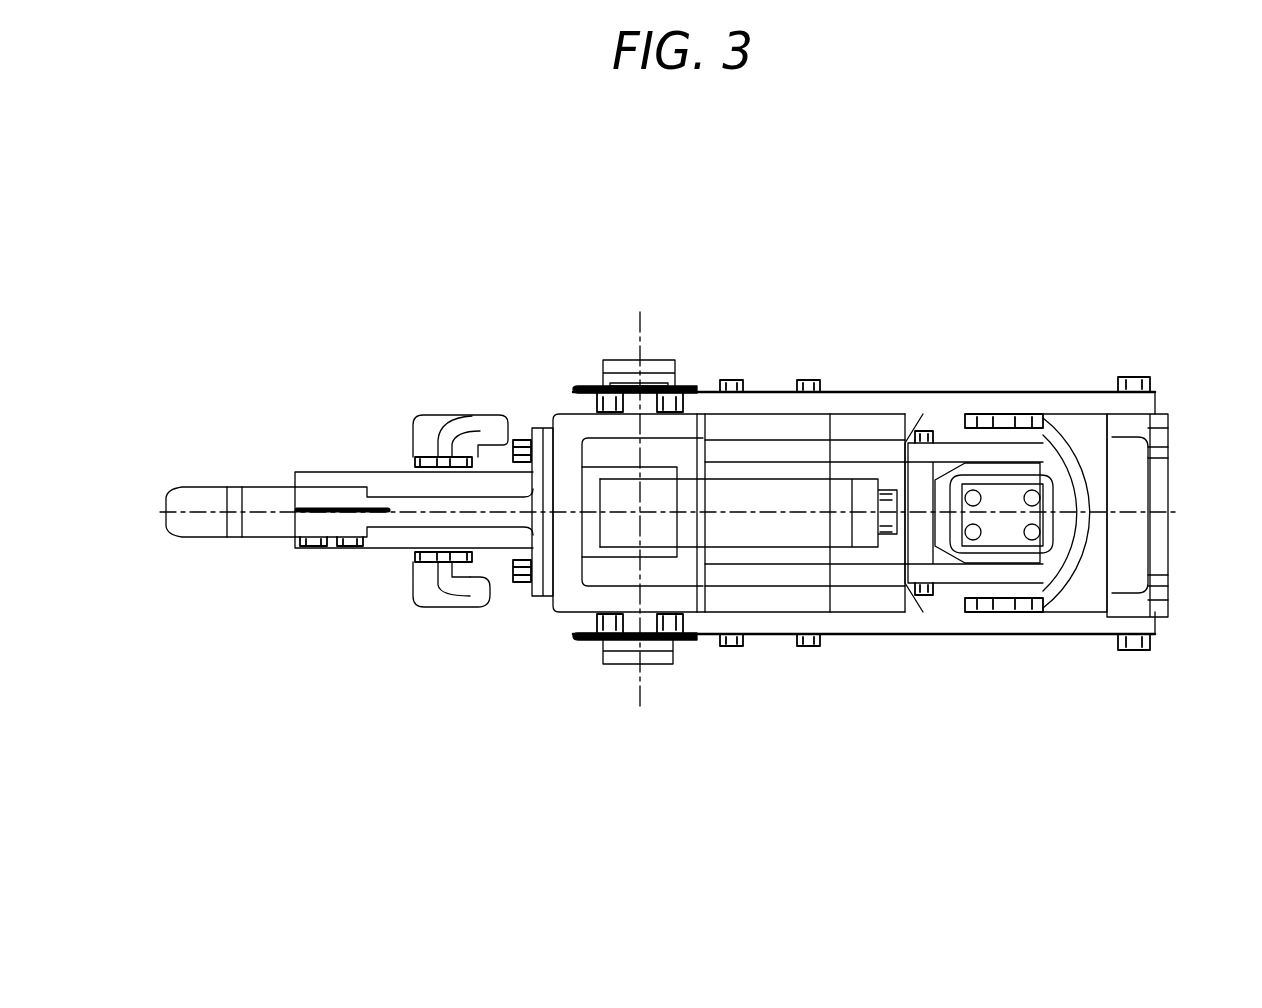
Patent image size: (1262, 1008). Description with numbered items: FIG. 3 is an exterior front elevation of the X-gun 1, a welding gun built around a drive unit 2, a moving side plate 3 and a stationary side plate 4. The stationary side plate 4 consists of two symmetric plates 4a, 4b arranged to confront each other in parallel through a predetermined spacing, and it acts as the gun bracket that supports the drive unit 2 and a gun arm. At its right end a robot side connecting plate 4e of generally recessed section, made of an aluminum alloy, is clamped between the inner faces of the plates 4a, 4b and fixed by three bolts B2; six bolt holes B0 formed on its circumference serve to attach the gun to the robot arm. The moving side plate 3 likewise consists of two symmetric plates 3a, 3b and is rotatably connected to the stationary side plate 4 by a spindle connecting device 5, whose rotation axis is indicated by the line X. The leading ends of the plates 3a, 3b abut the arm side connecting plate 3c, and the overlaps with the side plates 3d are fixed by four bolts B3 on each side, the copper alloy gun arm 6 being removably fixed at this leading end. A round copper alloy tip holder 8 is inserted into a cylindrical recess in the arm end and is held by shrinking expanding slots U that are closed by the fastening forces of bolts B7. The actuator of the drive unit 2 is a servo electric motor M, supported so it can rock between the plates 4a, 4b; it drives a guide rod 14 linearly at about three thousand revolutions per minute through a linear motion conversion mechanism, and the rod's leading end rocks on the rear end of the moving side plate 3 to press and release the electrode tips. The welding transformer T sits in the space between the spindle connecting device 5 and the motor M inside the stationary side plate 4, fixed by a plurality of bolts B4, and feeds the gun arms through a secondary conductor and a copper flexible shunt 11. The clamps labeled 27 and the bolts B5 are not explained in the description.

The X-gun 1 is at (997, 310).
The drive unit 2 is at (1077, 443).
The moving side plate 3 is at (948, 233).
The plate of moving side plate 3a is at (863, 453).
The plate of moving side plate 3b is at (851, 578).
The arm side connecting plate 3c is at (567, 588).
The side plate of moving side plate 3d is at (650, 430).
The stationary side plate 4 is at (1013, 762).
The plate of stationary side plate 4a is at (904, 450).
The plate of stationary side plate 4b is at (930, 625).
The robot side connecting plate 4e is at (1162, 483).
The spindle connecting device 5 is at (653, 354).
The gun arm 6 is at (378, 477).
The tip holder 8 is at (250, 493).
The flexible shunt 11 is at (802, 502).
The guide rod 14 is at (1055, 537).
The clamp 27 is at (470, 428).
The bolt holes B0 is at (1160, 430).
The bolts B2 is at (1137, 377).
The bolts B3 is at (596, 392).
The bolts B4 is at (810, 380).
The bolt B5 is at (513, 442).
The bolts B7 is at (348, 548).
The electric motor M is at (1060, 433).
The welding transformer T is at (763, 612).
The shrinking expanding slots U is at (320, 506).
The axis X is at (640, 511).